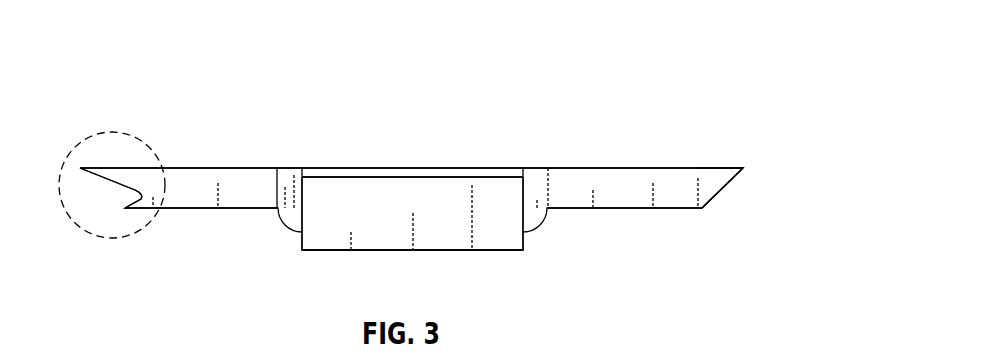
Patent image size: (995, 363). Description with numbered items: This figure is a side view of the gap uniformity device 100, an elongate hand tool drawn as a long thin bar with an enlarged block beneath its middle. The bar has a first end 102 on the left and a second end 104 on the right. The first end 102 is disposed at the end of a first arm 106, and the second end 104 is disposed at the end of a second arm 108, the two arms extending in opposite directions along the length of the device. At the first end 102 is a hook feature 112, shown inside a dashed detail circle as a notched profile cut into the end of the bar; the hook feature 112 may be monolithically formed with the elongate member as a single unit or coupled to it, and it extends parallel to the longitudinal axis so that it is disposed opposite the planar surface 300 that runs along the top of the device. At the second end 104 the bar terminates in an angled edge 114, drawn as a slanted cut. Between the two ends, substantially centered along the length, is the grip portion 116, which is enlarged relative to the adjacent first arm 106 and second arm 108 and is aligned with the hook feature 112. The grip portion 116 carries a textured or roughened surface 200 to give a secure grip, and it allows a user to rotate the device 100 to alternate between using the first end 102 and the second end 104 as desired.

The device 100 is at (732, 62).
The first end 102 is at (111, 133).
The second end 104 is at (712, 167).
The first arm 106 is at (200, 188).
The second arm 108 is at (622, 185).
The hook feature 112 is at (112, 135).
The angled edge 114 is at (727, 182).
The grip portion 116 is at (380, 237).
The textured or roughened surface 200 is at (500, 252).
The planar surface 300 is at (397, 167).